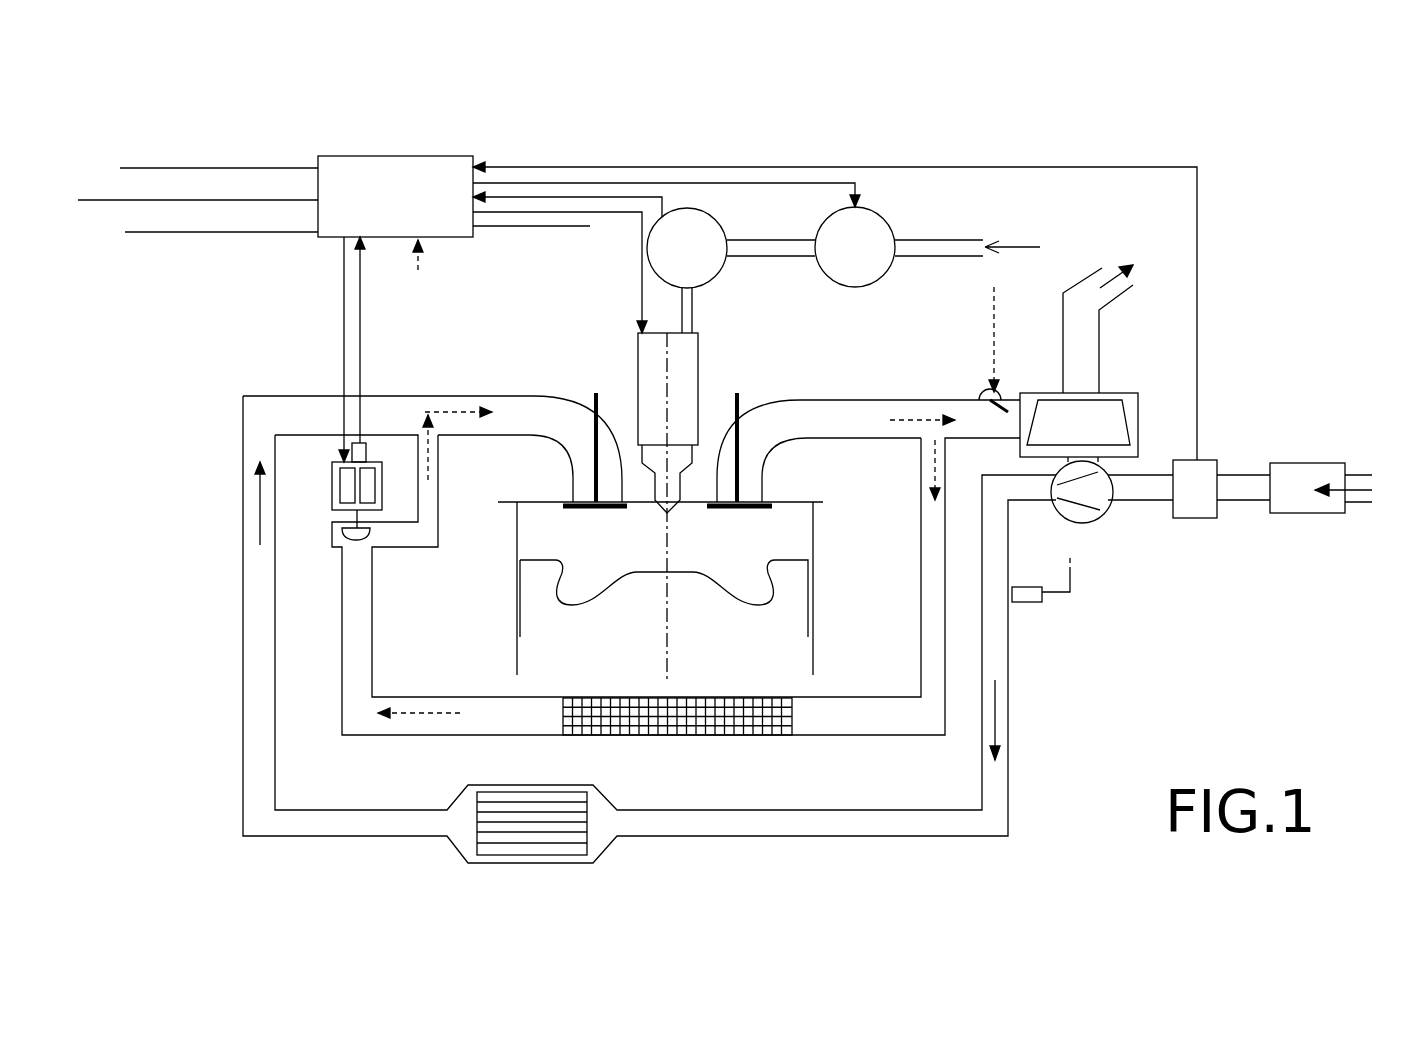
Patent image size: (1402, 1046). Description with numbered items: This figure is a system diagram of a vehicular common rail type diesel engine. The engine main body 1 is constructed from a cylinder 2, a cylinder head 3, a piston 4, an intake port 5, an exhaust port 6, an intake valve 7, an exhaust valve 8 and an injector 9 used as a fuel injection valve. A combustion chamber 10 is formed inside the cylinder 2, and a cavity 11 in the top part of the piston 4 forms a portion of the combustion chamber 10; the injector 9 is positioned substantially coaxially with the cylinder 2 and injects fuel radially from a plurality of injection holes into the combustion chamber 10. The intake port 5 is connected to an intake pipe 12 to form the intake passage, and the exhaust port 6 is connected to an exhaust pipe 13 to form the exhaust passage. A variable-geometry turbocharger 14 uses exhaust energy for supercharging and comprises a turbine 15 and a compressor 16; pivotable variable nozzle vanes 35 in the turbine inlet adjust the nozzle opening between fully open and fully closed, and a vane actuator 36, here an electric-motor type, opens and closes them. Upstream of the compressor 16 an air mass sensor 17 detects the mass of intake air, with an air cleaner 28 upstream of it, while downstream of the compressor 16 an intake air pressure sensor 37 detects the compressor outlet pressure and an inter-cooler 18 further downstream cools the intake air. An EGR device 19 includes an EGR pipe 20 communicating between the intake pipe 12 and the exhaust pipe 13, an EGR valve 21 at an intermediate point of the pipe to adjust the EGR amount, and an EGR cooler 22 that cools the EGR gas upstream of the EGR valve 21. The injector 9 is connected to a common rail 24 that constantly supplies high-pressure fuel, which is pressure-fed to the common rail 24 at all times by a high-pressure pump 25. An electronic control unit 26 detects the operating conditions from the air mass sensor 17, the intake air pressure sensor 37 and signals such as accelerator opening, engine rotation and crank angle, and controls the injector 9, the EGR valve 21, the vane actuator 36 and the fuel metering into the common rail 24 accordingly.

The engine main body 1 is at (484, 613).
The cylinder 2 is at (812, 542).
The cylinder head 3 is at (810, 503).
The piston 4 is at (765, 617).
The intake port 5 is at (573, 443).
The exhaust port 6 is at (757, 457).
The intake valve 7 is at (597, 420).
The exhaust valve 8 is at (740, 410).
The injector 9 is at (683, 358).
The combustion chamber 10 is at (540, 544).
The cavity 11 is at (732, 582).
The intake pipe 12 is at (240, 652).
The exhaust pipe 13 is at (892, 395).
The variable-geometry turbocharger 14 is at (1169, 408).
The turbine 15 is at (1088, 418).
The compressor 16 is at (1100, 512).
The air mass sensor 17 is at (1195, 500).
The inter-cooler 18 is at (525, 820).
The EGR device 19 is at (306, 525).
The EGR pipe 20 is at (860, 735).
The EGR valve 21 is at (332, 493).
The EGR cooler 22 is at (685, 718).
The common rail 24 is at (720, 280).
The high-pressure pump 25 is at (890, 268).
The electronic control unit 26 is at (388, 153).
The air cleaner 28 is at (1302, 500).
The variable nozzle vanes 35 is at (1005, 405).
The vane actuator 36 is at (981, 391).
The intake air pressure sensor 37 is at (1027, 592).